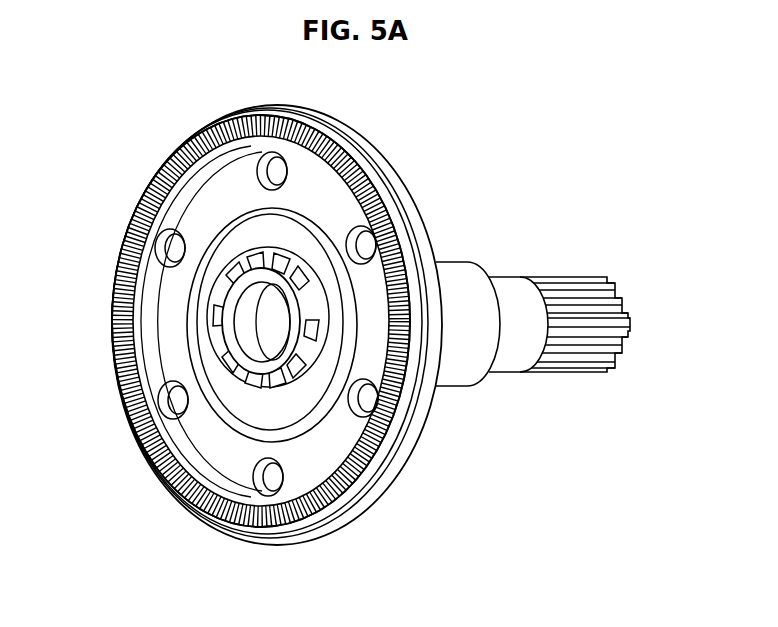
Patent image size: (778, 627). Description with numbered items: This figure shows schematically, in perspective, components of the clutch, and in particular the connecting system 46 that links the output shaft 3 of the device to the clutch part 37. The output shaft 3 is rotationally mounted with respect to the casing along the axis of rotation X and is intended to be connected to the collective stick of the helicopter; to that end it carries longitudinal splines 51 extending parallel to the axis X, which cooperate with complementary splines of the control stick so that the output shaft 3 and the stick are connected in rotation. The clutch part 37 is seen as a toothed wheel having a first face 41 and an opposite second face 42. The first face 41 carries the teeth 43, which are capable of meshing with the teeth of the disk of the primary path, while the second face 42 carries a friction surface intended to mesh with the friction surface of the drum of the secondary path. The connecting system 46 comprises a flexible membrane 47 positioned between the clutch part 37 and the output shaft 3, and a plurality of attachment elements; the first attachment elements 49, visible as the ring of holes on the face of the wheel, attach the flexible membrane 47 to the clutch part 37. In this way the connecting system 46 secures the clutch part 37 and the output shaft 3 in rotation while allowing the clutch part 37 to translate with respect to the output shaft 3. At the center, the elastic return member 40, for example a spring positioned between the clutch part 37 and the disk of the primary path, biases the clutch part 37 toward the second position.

The output shaft 3 is at (510, 360).
The longitudinal splines 51 is at (562, 268).
The second face 42 is at (412, 465).
The clutch part 37 is at (335, 117).
The connecting system 46 is at (224, 102).
The teeth 43 is at (160, 183).
The first face 41 is at (200, 445).
The first attachment elements 49 is at (358, 244).
The flexible membrane 47 is at (268, 413).
The elastic return member 40 is at (230, 316).